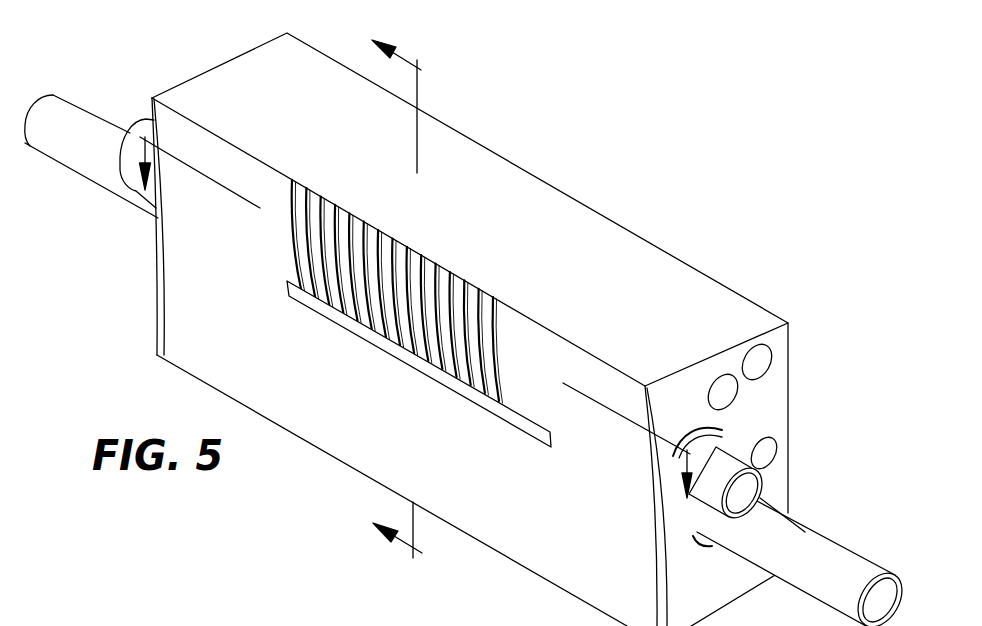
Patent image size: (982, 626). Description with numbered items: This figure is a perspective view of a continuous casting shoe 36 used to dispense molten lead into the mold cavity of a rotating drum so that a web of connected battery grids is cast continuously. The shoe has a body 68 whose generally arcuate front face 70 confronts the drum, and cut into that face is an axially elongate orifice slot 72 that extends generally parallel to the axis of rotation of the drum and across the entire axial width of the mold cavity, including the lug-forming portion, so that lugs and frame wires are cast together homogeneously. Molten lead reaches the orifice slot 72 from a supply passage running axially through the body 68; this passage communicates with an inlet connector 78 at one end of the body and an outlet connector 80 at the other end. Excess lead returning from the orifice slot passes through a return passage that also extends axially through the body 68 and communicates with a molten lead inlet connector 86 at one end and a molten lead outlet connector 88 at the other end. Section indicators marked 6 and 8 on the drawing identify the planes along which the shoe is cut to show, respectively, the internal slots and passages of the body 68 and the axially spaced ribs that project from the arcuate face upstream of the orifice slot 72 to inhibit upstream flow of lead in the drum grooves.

The shoe 36 is at (600, 166).
The body 68 is at (652, 230).
The arcuate front face 70 is at (180, 331).
The orifice slot 72 is at (530, 437).
The inlet connector 78 is at (765, 484).
The outlet connector 80 is at (138, 127).
The molten lead inlet connector 86 is at (833, 541).
The molten lead outlet connector 88 is at (62, 107).
The section line 6- 6 is at (385, 285).
The section line 8- 8 is at (417, 342).